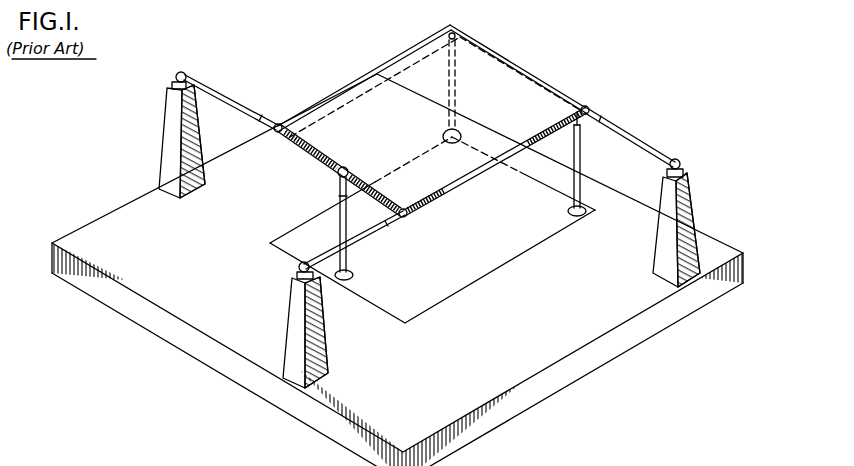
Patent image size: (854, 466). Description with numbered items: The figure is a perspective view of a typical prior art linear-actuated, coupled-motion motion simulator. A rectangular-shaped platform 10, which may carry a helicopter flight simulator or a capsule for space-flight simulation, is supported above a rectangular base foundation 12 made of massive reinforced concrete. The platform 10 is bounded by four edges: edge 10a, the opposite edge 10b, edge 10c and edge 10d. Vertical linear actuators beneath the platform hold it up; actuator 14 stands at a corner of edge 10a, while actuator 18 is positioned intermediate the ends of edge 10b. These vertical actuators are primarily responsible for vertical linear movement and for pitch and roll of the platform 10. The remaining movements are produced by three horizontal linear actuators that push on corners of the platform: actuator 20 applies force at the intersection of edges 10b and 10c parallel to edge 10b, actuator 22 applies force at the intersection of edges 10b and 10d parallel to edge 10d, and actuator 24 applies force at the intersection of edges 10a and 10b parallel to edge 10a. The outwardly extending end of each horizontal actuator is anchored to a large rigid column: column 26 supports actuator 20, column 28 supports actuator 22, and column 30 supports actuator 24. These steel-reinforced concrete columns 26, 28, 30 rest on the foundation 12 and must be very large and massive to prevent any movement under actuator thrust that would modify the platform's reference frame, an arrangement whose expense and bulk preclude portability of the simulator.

The platform 10 is at (439, 120).
The edge of platform 10a is at (562, 92).
The edge of platform 10b is at (335, 173).
The edge of platform 10c is at (349, 86).
The edge of platform 10d is at (497, 162).
The base foundation 12 is at (242, 371).
The vertical linear actuator 14 is at (580, 186).
The vertical linear actuator 18 is at (446, 91).
The horizontal linear actuator 20 is at (242, 110).
The horizontal linear actuator 22 is at (378, 226).
The horizontal linear actuator 24 is at (635, 139).
The rigid column 26 is at (164, 137).
The rigid column 28 is at (285, 318).
The rigid column 30 is at (663, 226).